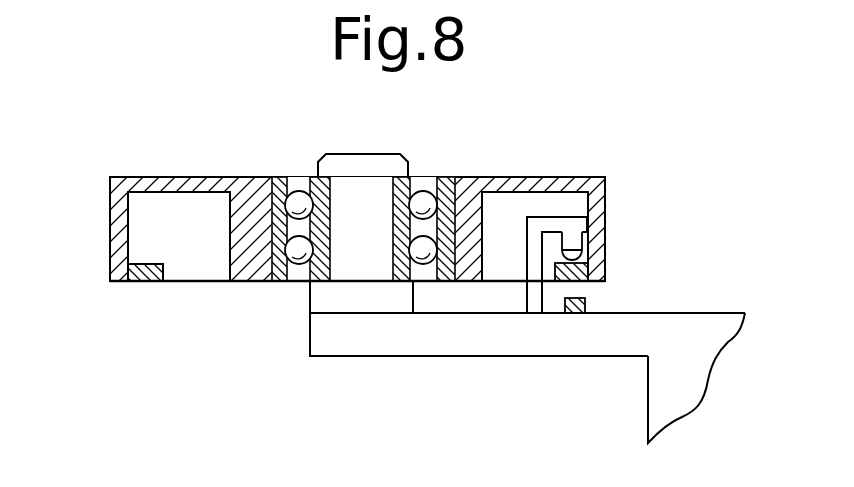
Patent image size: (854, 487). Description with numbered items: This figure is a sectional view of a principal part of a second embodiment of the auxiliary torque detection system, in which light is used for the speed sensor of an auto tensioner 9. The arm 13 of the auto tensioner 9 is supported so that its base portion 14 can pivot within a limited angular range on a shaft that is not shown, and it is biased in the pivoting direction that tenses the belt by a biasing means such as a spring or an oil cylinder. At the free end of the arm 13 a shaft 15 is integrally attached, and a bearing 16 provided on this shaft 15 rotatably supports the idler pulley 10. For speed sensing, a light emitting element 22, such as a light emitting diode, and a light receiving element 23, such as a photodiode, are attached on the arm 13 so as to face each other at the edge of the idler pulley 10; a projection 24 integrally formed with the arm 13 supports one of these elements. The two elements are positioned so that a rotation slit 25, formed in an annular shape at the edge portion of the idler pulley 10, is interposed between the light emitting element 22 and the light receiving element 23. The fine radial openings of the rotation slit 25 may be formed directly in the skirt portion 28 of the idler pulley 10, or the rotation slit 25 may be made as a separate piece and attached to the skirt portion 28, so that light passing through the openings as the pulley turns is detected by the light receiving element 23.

The auto tensioner 9 is at (209, 350).
The idler pulley 10 is at (196, 178).
The arm 13 is at (415, 343).
The base portion 14 is at (662, 392).
The shaft 15 is at (360, 267).
The bearing 16 is at (300, 178).
The light emitting element 22 is at (571, 240).
The light receiving element 23 is at (585, 300).
The projection 24 is at (525, 302).
The rotation slit 25 is at (600, 250).
The skirt portion 28 is at (120, 253).